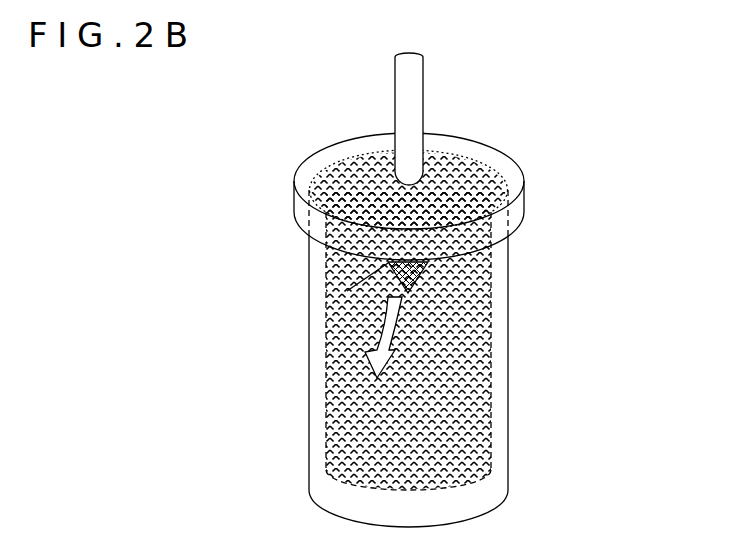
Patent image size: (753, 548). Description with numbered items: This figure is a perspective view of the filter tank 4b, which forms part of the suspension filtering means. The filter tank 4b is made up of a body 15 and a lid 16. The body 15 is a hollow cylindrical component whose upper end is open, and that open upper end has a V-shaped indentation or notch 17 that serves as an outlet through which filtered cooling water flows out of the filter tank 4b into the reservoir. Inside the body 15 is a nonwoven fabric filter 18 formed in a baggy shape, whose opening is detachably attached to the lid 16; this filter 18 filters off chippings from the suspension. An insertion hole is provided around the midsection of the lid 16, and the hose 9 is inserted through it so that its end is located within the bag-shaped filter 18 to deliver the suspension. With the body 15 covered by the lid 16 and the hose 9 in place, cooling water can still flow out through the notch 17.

The filter tank 4b is at (418, 299).
The hose 9 is at (412, 92).
The body 15 is at (317, 375).
The lid 16 is at (493, 153).
The notch 17 is at (418, 279).
The filter 18 is at (405, 293).